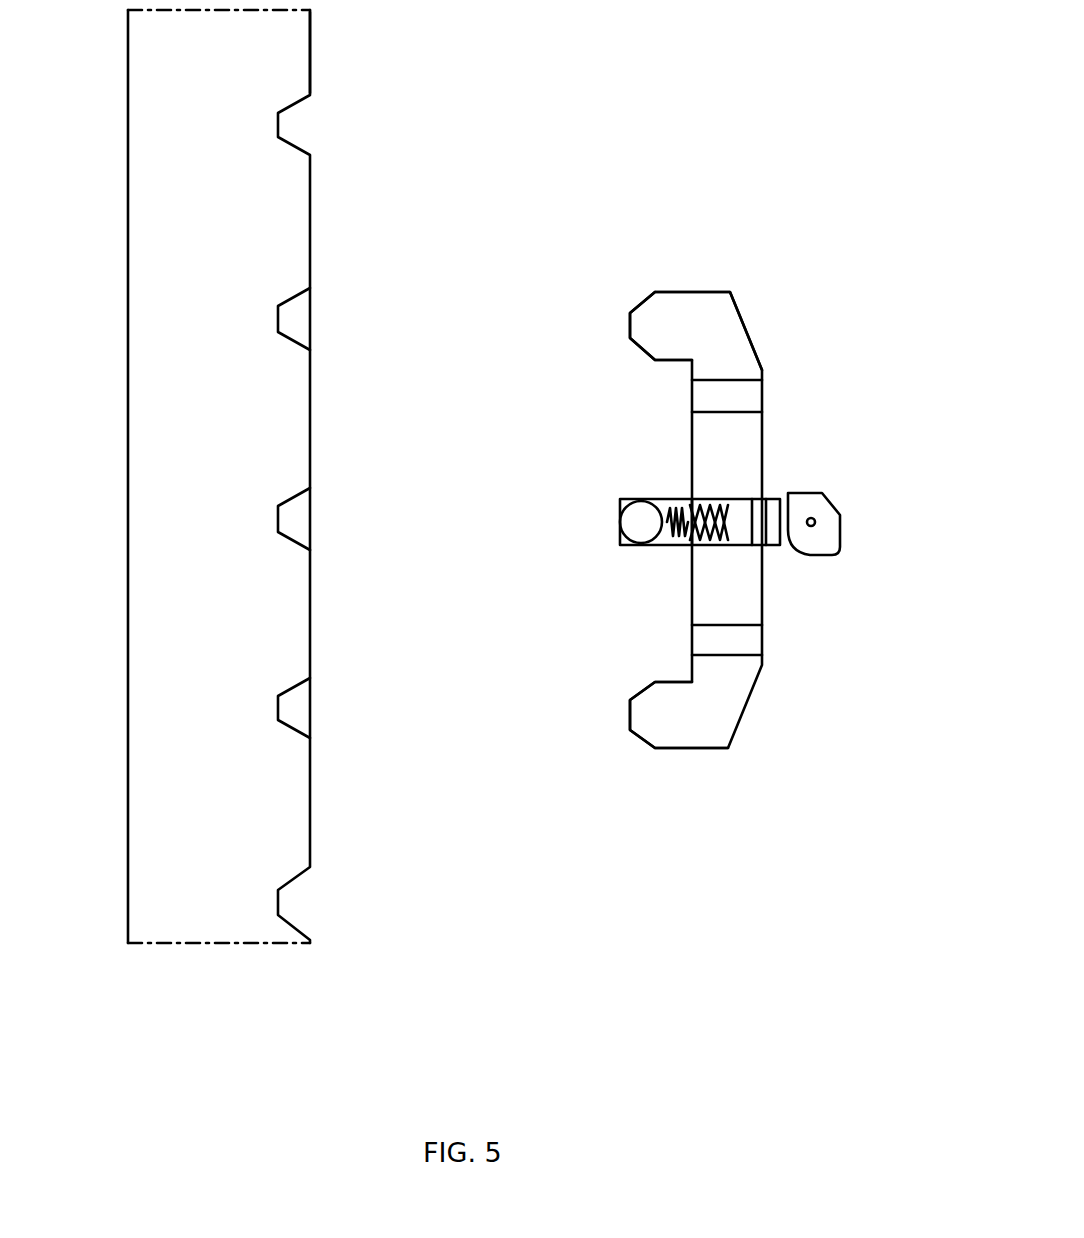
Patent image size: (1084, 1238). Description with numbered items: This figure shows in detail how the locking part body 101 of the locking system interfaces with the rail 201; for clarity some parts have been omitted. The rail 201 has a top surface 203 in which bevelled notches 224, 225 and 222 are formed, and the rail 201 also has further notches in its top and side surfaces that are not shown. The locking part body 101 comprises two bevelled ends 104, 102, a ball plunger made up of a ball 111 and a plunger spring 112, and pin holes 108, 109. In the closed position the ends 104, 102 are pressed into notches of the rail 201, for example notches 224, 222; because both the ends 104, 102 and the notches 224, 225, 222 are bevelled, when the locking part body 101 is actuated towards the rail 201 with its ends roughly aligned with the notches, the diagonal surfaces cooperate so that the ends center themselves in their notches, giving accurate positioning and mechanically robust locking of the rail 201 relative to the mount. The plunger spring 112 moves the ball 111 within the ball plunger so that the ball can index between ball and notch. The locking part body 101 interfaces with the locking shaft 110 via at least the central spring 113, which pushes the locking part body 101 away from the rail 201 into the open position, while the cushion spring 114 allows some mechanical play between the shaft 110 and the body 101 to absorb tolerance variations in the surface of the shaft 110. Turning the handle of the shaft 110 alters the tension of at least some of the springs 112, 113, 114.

The rail 201 is at (181, 895).
The top surface 203 is at (316, 62).
The notch 222 is at (296, 687).
The notch 224 is at (296, 298).
The notch 225 is at (296, 497).
The locking part body 101 is at (750, 713).
The end 102 is at (630, 735).
The end 104 is at (627, 323).
The pin hole 108 is at (766, 397).
The pin hole 109 is at (766, 643).
The locking shaft 110 is at (806, 490).
The ball 111 is at (621, 503).
The plunger spring 112 is at (668, 544).
The central spring 113 is at (692, 497).
The cushion spring 114 is at (766, 498).